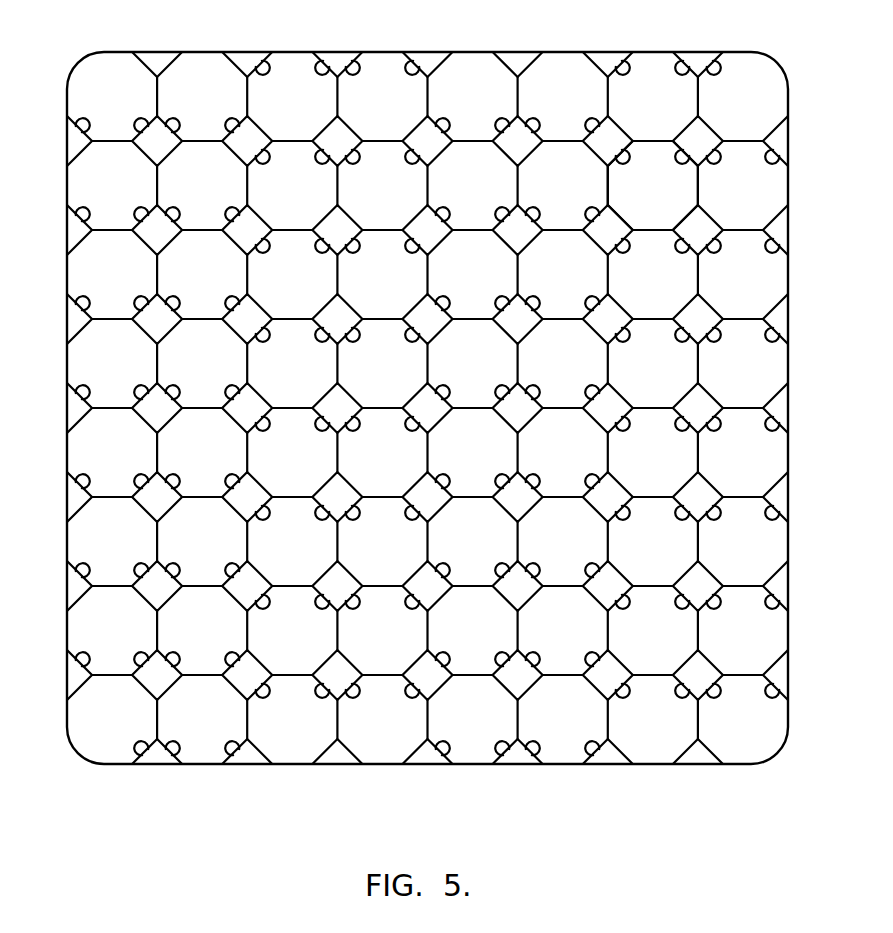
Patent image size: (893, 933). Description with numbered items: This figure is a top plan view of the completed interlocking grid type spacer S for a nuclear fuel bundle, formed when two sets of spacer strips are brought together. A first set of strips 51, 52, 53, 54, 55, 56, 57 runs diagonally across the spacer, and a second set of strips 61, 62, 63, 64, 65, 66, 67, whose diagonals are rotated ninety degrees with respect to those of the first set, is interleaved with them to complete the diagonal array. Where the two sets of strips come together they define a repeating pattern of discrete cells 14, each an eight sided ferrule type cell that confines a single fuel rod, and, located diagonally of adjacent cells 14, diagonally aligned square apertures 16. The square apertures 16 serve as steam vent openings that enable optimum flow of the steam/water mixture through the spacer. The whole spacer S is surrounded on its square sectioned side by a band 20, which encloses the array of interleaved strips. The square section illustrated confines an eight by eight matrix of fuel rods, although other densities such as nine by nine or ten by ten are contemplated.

The discrete cell 14 is at (670, 190).
The square aperture 16 is at (620, 128).
The band 20 is at (790, 457).
The spacer S is at (441, 408).
The strip 51 is at (180, 52).
The strip 52 is at (282, 52).
The strip 53 is at (370, 52).
The strip 54 is at (458, 52).
The strip 55 is at (545, 52).
The strip 56 is at (622, 52).
The strip 57 is at (713, 52).
The strip 61 is at (67, 649).
The strip 62 is at (67, 560).
The strip 63 is at (67, 471).
The strip 64 is at (67, 382).
The strip 65 is at (67, 293).
The strip 66 is at (67, 206).
The strip 67 is at (67, 114).